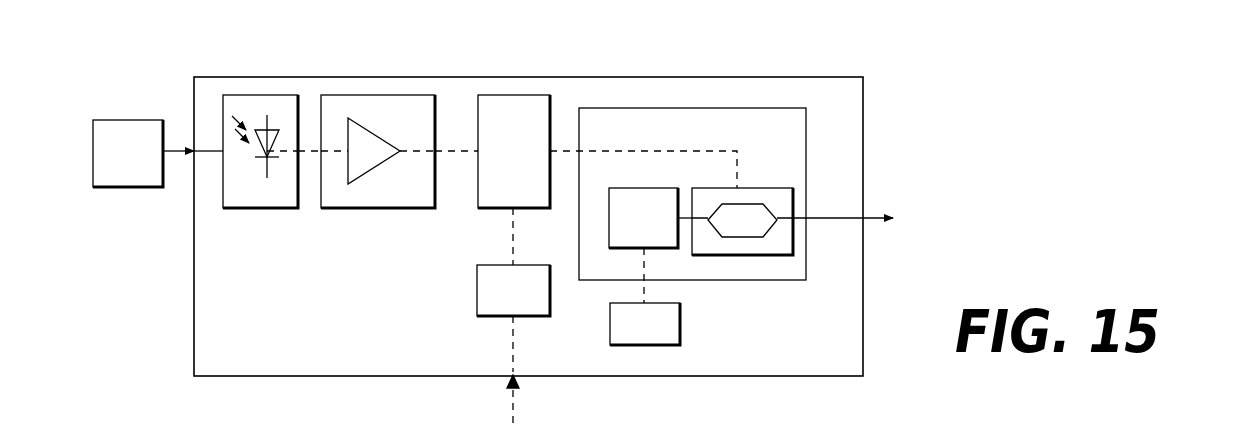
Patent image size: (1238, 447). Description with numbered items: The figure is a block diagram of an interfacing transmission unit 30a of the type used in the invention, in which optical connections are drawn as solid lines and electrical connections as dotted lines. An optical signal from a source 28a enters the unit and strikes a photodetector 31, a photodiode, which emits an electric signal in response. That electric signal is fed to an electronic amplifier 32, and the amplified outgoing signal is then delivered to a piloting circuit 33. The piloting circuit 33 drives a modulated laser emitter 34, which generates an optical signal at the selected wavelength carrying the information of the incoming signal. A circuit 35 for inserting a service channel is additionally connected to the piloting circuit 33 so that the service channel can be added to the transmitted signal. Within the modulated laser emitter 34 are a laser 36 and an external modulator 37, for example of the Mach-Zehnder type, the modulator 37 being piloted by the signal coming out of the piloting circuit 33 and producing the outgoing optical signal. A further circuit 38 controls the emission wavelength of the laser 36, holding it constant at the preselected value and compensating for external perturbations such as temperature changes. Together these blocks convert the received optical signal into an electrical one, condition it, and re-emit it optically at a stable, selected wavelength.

The source 28a is at (125, 128).
The receiver unit 30a is at (308, 86).
The photodetector 31 is at (250, 198).
The electronic amplifier 32 is at (370, 195).
The piloting circuit 33 is at (506, 113).
The modulated laser emitter 34 is at (762, 123).
The circuit for inserting a service channel 35 is at (493, 292).
The laser 36 is at (633, 220).
The external modulator 37 is at (777, 197).
The circuit controlling emission wavelength 38 is at (660, 324).